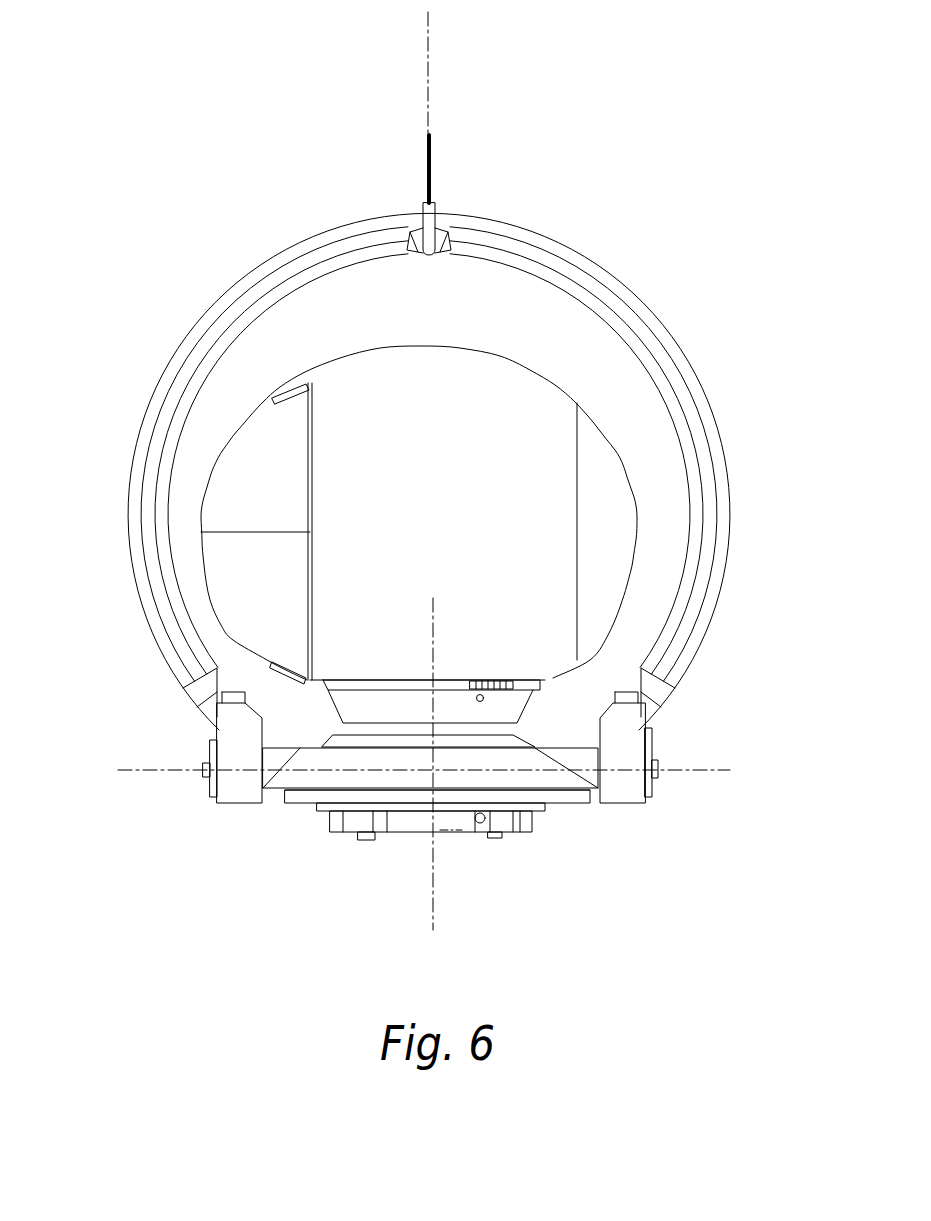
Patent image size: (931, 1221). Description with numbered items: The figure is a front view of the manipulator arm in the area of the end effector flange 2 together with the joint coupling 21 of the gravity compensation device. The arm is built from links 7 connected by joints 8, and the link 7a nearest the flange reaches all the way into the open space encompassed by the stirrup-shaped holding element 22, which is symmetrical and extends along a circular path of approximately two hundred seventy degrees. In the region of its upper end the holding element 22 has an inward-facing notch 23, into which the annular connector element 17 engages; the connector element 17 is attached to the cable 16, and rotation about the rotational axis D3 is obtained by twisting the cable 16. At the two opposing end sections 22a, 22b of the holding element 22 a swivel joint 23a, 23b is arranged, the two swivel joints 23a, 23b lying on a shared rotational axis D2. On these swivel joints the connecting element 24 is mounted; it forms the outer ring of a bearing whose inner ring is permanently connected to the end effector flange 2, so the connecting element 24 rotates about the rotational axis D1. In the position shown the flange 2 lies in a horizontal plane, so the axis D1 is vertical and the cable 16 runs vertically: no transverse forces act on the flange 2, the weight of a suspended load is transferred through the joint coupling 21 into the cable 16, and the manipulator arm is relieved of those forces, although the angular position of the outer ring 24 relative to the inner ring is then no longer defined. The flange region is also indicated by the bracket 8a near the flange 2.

The end effector flange 2 is at (462, 823).
The links 7 is at (253, 475).
The link near the end effector flange 7a is at (432, 417).
The joints 8 is at (465, 737).
The bracket flange 8a is at (491, 685).
The cable 16 is at (423, 168).
The connector element 17 is at (430, 222).
The joint coupling 21 is at (683, 247).
The stirrup-shaped holding element 22 is at (530, 250).
The end section 22a is at (200, 692).
The end section 22b is at (657, 693).
The inward-facing notch 23 is at (418, 238).
The swivel joint 23a is at (232, 779).
The swivel joint 23b is at (628, 779).
The connecting element 24 is at (325, 772).
The rotational axis D1 is at (445, 890).
The rotational axis D2 is at (140, 778).
The rotational axis D3 is at (433, 62).